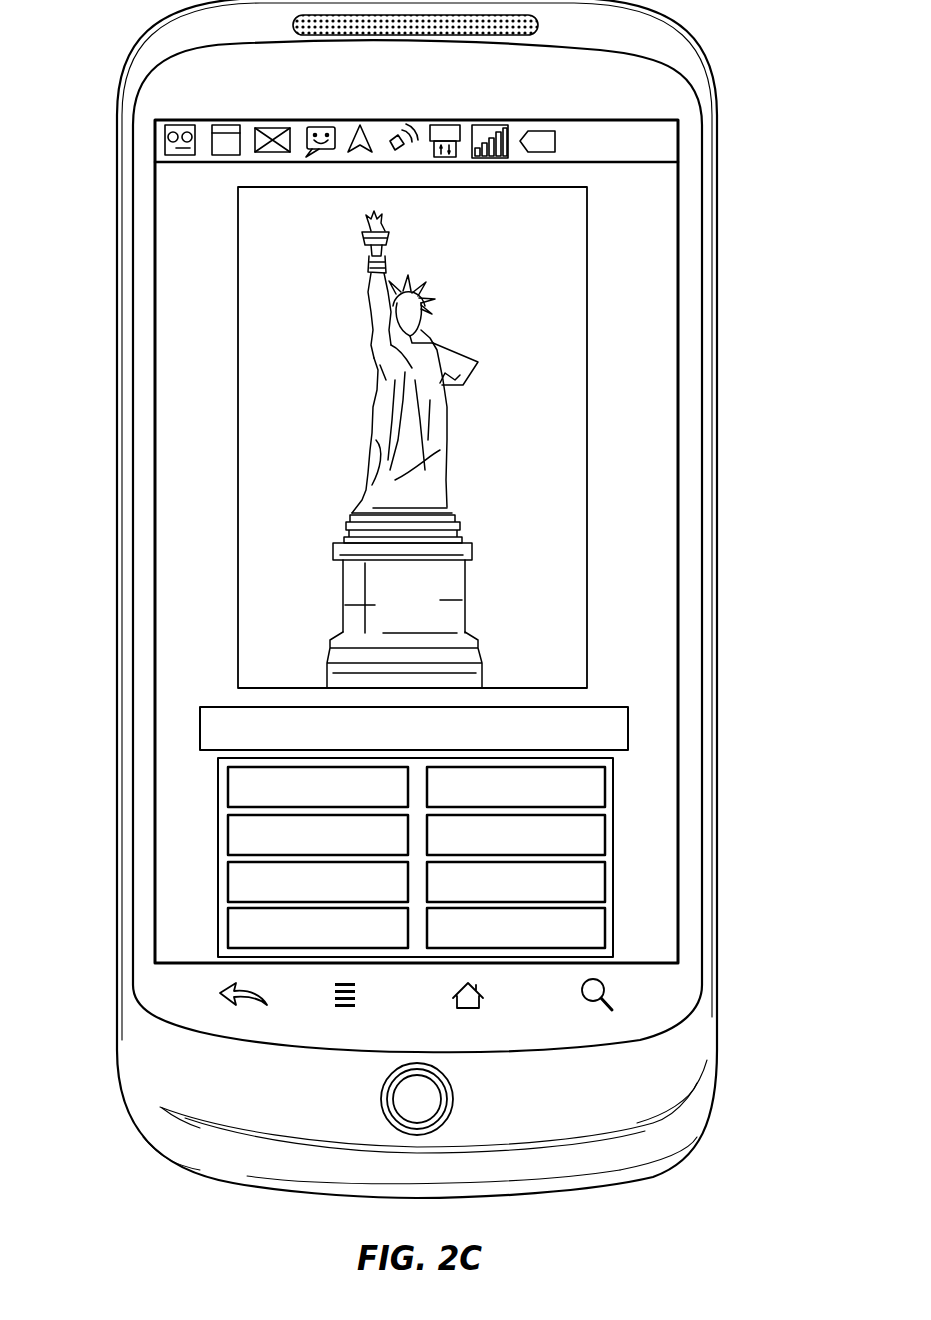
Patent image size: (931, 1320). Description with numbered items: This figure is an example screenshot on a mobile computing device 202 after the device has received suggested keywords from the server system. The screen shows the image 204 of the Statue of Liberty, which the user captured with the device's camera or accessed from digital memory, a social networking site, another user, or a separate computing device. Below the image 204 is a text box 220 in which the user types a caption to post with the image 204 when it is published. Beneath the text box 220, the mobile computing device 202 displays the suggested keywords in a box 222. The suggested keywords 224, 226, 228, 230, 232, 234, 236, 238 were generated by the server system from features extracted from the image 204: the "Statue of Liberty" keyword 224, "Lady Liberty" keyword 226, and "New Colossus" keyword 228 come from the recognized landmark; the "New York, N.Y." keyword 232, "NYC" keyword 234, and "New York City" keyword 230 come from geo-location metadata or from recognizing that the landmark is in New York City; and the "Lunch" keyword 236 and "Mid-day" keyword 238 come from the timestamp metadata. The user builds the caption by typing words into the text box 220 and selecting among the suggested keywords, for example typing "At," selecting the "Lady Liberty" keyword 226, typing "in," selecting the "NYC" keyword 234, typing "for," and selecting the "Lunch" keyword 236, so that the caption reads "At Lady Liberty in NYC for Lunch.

The mobile computing device 202 is at (702, 35).
The image 204 is at (585, 317).
The text box 220 is at (628, 727).
The box 222 is at (613, 758).
The suggested keyword 224 is at (228, 786).
The suggested keyword 226 is at (228, 837).
The suggested keyword 228 is at (228, 883).
The suggested keyword 230 is at (228, 926).
The suggested keyword 232 is at (605, 787).
The suggested keyword 234 is at (605, 833).
The suggested keyword 236 is at (605, 881).
The suggested keyword 238 is at (605, 927).